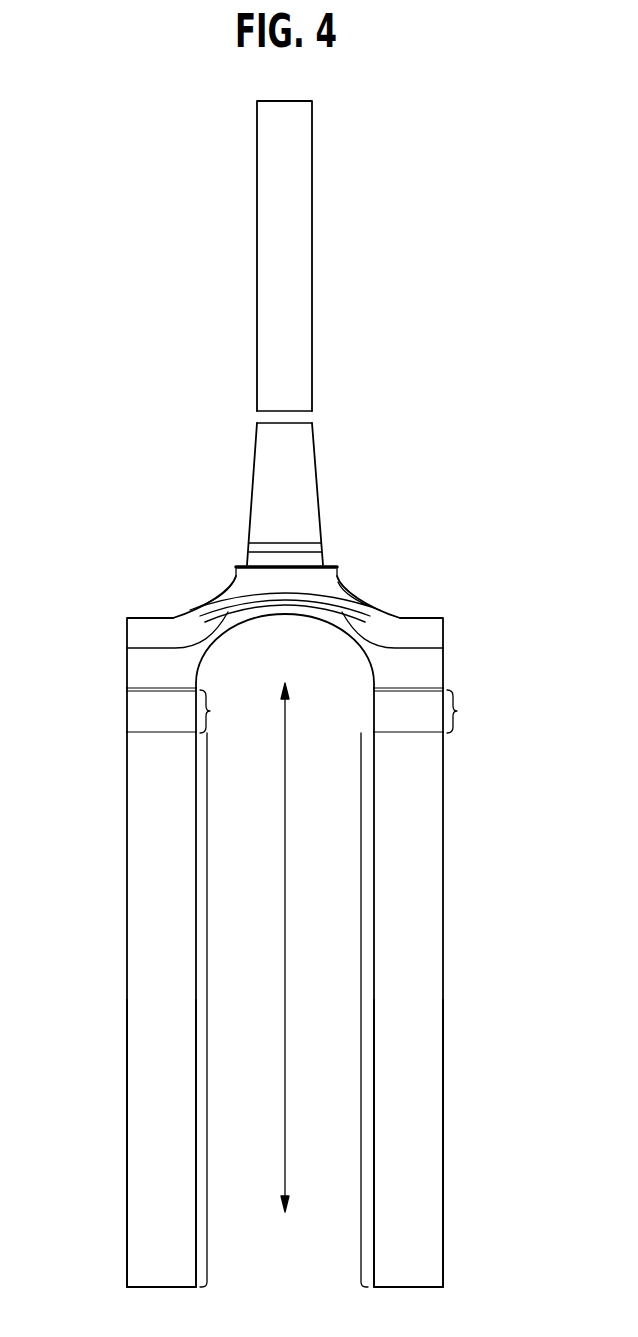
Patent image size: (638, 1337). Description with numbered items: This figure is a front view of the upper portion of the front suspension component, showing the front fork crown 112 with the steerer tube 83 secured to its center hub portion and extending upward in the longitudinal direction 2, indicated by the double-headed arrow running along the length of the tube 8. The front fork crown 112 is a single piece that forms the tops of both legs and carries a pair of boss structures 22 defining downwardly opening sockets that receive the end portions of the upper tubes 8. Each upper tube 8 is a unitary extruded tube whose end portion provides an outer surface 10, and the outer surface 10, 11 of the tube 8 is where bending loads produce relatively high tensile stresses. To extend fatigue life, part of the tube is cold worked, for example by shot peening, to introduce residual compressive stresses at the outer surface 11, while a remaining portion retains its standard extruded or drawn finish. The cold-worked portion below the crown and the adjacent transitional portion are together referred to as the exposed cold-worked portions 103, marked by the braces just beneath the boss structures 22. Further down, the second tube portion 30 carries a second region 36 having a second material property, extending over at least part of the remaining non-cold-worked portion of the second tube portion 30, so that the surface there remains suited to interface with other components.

The steerer tube 83 is at (302, 310).
The front fork crown 112 is at (347, 584).
The boss structures 22 is at (127, 668).
The exposed cold-worked portions 103 is at (210, 711).
The outer surface 11 is at (144, 708).
The outer surface 10 is at (142, 803).
The upper tube 8 is at (128, 1050).
The second region 36 is at (207, 1010).
The second tube portion 30 is at (361, 990).
The longitudinal direction 2 is at (285, 886).